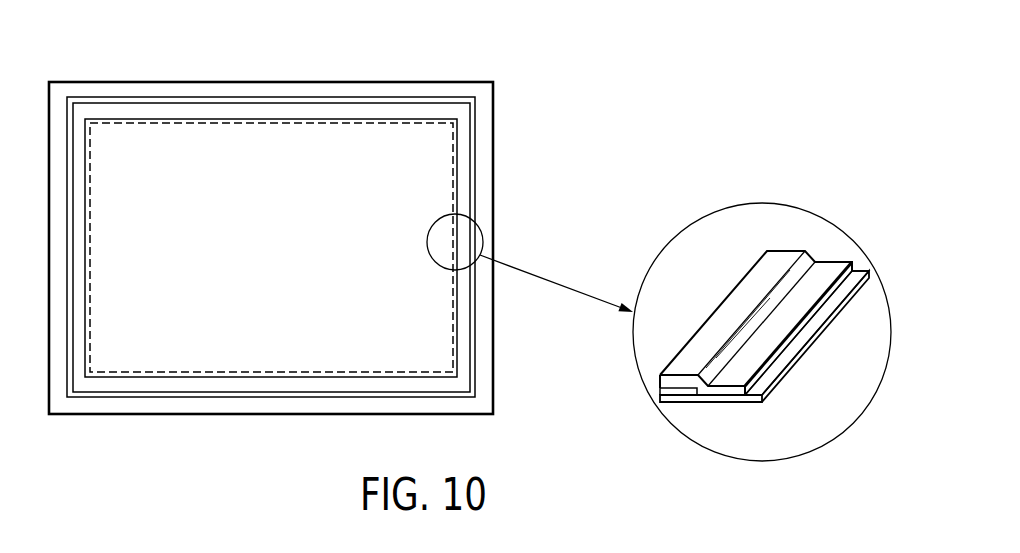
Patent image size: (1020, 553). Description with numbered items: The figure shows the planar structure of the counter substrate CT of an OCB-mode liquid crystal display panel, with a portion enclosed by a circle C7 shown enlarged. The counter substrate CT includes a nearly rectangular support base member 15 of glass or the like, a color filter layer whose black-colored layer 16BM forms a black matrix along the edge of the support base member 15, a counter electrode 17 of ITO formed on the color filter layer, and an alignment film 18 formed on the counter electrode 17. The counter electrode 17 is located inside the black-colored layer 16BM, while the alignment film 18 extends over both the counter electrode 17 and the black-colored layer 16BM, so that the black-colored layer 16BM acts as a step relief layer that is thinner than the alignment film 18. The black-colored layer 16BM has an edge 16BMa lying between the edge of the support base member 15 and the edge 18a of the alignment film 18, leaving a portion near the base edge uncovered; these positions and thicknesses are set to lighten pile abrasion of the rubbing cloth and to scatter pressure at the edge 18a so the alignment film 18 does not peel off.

The support base member 15 is at (380, 83).
The counter substrate CT is at (463, 73).
The black-colored layer 16BM is at (478, 135).
The alignment film 18 is at (465, 172).
The edge of the alignment film 18a is at (853, 266).
The edge of the black-colored layer 16BMa is at (808, 345).
The counter electrode 17 is at (453, 198).
The circle C7 is at (480, 235).